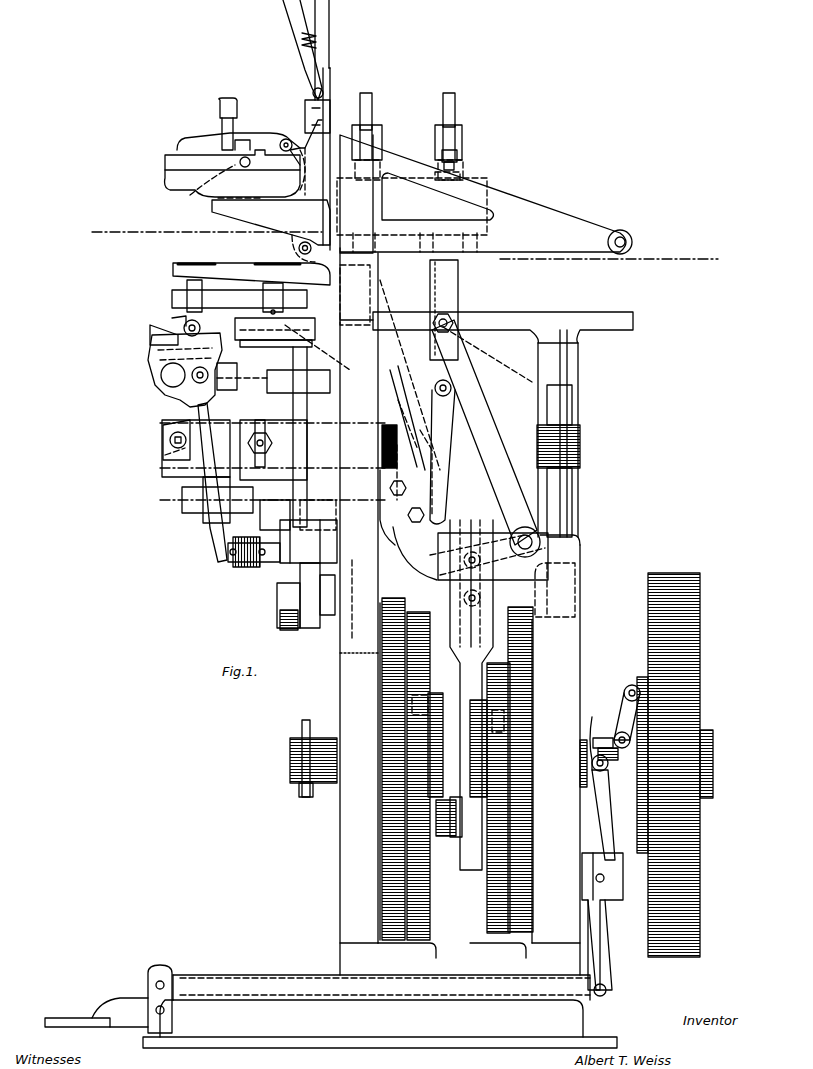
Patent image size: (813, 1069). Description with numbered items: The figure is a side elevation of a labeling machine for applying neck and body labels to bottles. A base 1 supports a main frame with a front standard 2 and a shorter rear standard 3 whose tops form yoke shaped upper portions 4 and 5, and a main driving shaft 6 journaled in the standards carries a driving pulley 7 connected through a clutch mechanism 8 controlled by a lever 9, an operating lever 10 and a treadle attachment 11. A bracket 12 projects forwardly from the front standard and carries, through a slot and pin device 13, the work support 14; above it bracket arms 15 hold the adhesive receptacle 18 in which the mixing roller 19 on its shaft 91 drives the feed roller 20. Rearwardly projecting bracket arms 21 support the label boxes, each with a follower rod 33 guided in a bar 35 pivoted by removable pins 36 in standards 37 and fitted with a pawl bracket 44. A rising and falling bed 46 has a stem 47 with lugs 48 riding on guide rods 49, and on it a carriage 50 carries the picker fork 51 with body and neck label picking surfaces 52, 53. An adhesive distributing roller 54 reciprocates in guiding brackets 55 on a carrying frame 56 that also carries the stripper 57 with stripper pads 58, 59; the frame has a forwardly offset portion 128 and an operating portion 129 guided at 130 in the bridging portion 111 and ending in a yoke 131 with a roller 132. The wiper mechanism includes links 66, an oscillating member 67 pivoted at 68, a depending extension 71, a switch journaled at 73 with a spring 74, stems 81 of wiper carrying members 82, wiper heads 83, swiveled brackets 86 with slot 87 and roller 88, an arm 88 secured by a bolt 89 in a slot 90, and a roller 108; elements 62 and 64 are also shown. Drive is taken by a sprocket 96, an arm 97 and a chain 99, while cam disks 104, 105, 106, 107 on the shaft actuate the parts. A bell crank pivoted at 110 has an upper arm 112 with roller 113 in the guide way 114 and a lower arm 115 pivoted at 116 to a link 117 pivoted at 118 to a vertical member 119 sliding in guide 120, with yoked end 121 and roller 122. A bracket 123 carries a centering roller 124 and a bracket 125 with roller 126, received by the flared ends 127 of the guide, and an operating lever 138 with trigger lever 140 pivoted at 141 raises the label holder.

The base 1 is at (380, 1024).
The front standard 2 is at (388, 611).
The rear standard 3 is at (525, 760).
The yoke shaped upper portion 4 is at (356, 578).
The yoke shaped upper portion 5 is at (408, 245).
The main driving shaft 6 is at (599, 785).
The driving pulley 7 is at (680, 765).
The clutch mechanism 8 is at (627, 760).
The lever 9 is at (602, 924).
The operating lever 10 is at (235, 988).
The treadle attachment 11 is at (117, 1000).
The bracket 12 is at (162, 430).
The slot and pin device 13 is at (252, 445).
The work support 14 is at (322, 392).
The bracket arms 15 is at (300, 240).
The adhesive receptacle 18 is at (232, 168).
The mixing roller 19 is at (190, 197).
The feed roller 20 is at (282, 135).
The bracket arms 21 is at (413, 220).
The follower rod 33 is at (370, 96).
The bar 35 is at (460, 152).
The removable pins 36 is at (458, 165).
The standards 37 is at (460, 178).
The bracket 44 is at (462, 132).
The rising and falling bed 46 is at (572, 322).
The stem 47 is at (572, 385).
The lugs 48 is at (575, 447).
The guide rods 49 is at (560, 495).
The carriage 50 is at (388, 305).
The picker fork 51 is at (230, 272).
The body label picking surface 52 is at (277, 253).
The neck label picking surface 53 is at (196, 253).
The adhesive distributing roller 54 is at (303, 240).
The guiding brackets 55 is at (306, 115).
The carrying frame 56 is at (405, 413).
The stripper 57 is at (239, 299).
The body label stripper pad 58 is at (273, 298).
The neck label stripper pad 59 is at (194, 296).
The block 62 is at (326, 502).
The rail 64 is at (320, 342).
The links 66 is at (300, 565).
The oscillating member 67 is at (326, 595).
The pivot 68 is at (334, 575).
The depending extension 71 is at (290, 615).
The journal 73 is at (258, 560).
The spring 74 is at (232, 565).
The stems 81 is at (217, 540).
The wiper carrying members 82 is at (185, 373).
The wiper heads 83 is at (183, 322).
The swiveled bracket 86 is at (224, 390).
The horizontal slot 87 is at (163, 380).
The arm 88 is at (190, 380).
The bolt or pin 89 is at (180, 452).
The slot 90 is at (170, 445).
The shaft 91 is at (248, 168).
The sprocket 96 is at (290, 745).
The arm 97 is at (300, 760).
The chain 99 is at (300, 790).
The cam disk 104 is at (395, 738).
The cam disk 105 is at (415, 755).
The cam disk 106 is at (495, 750).
The cam disk 107 is at (518, 762).
The roller 108 is at (395, 643).
The pivot 110 is at (545, 546).
The bridging portion 111 is at (492, 561).
The long upper arm 112 is at (482, 425).
The roller 113 is at (455, 335).
The vertical guide way 114 is at (446, 288).
The lower arm 115 is at (493, 548).
The pivot 116 is at (440, 566).
The link 117 is at (535, 580).
The pivot 118 is at (465, 566).
The vertically disposed member 119 is at (471, 695).
The guide 120 is at (520, 628).
The yoked end 121 is at (465, 840).
The roller 122 is at (500, 708).
The bracket 123 is at (483, 193).
The centering roller 124 is at (628, 237).
The bracket 125 is at (440, 440).
The centering roller 126 is at (435, 388).
The flared ends 127 is at (458, 262).
The forwardly offset portion 128 is at (318, 167).
The operating portion 129 is at (465, 600).
The guide 130 is at (410, 570).
The yoke 131 is at (445, 836).
The roller 132 is at (412, 705).
The operating lever 138 is at (296, 40).
The trigger lever 140 is at (322, 22).
The pivot 141 is at (324, 92).